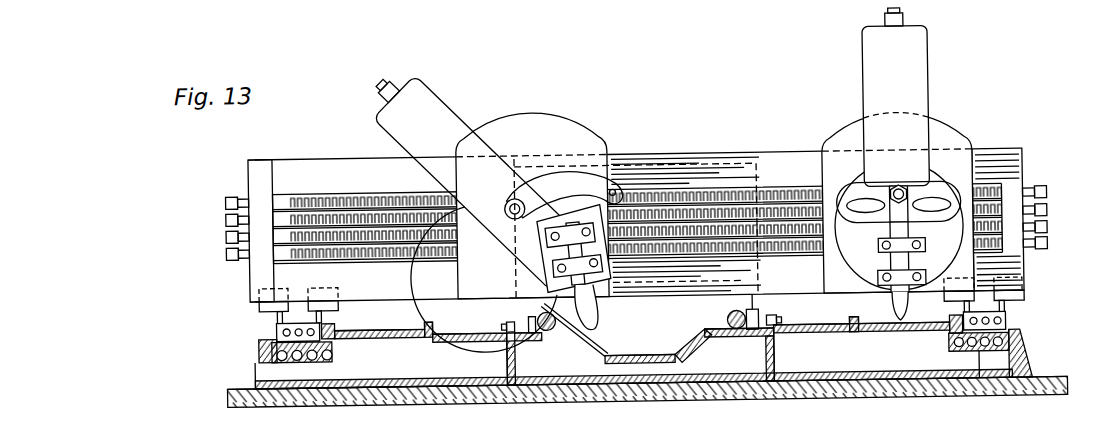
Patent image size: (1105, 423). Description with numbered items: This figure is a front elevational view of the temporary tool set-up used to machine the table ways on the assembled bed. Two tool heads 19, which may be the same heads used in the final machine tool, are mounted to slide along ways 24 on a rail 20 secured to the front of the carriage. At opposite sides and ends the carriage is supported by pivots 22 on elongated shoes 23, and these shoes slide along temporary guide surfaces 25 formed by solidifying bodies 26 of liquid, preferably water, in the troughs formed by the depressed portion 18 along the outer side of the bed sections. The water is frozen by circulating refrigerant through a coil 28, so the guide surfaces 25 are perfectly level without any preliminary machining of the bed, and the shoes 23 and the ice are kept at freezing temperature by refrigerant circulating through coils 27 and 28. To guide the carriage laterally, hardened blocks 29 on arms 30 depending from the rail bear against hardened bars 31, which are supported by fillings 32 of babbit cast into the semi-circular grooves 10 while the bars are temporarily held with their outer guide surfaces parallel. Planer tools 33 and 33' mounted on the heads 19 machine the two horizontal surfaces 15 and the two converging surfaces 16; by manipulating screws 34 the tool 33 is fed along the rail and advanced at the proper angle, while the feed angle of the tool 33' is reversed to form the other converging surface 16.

The grooves 10 is at (553, 322).
The horizontal surfaces 15 is at (378, 326).
The converging surfaces 16 is at (597, 342).
The depressed portion 18 is at (268, 364).
The tool heads 19 is at (580, 129).
The rail 20 is at (348, 150).
The pivots 22 is at (990, 306).
The shoes 23 is at (275, 321).
The ways 24 is at (273, 166).
The guide surfaces 25 is at (275, 331).
The bodies of liquid 26 is at (260, 349).
The coils 27 is at (1007, 329).
The coil 28 is at (950, 351).
The hardened blocks 29 is at (749, 329).
The arms 30 is at (758, 324).
The hardened bars 31 is at (730, 330).
The fillings 32 is at (726, 322).
The tool 33 is at (589, 267).
The tool 33' is at (895, 271).
The screws 34 is at (435, 237).